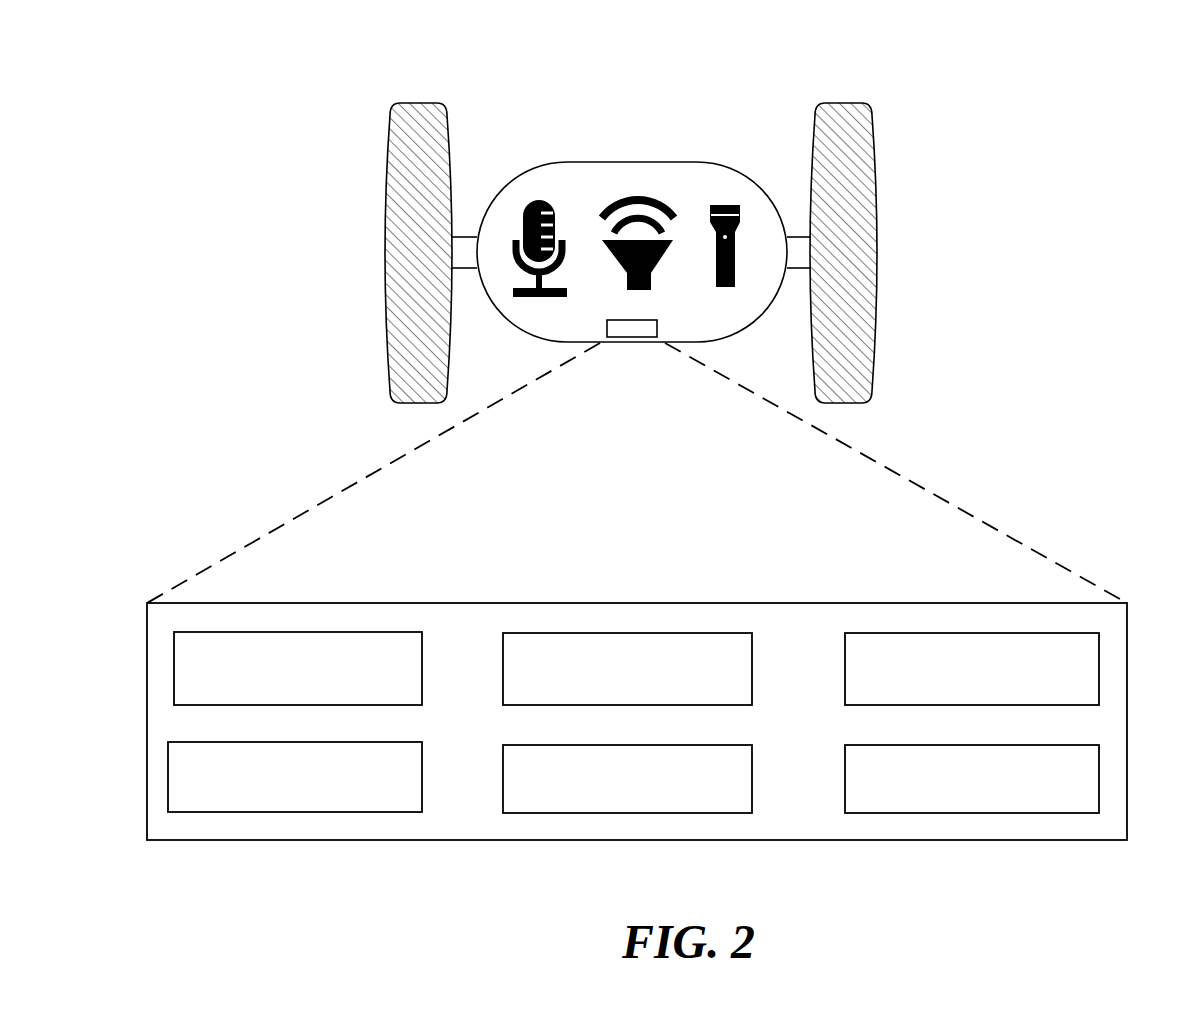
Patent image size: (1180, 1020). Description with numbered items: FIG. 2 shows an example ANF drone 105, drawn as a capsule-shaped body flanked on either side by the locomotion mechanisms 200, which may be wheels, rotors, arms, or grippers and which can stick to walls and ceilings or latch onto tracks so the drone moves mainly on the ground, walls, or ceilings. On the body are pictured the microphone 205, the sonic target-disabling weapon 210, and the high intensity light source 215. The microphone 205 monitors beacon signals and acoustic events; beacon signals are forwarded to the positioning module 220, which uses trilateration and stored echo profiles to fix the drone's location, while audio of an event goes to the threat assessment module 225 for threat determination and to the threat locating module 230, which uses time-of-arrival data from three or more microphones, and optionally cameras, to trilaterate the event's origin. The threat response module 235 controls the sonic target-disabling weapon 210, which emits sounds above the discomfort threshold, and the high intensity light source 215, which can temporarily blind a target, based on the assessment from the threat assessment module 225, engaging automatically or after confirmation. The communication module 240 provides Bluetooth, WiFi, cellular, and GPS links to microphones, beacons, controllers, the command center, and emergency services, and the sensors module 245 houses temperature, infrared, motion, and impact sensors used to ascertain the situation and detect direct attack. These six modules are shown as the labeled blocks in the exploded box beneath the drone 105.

The ANF drone 105 is at (1074, 86).
The locomotion mechanisms 200 is at (386, 253).
The microphone 205 is at (527, 198).
The sonic target-disabling weapon 210 is at (618, 200).
The high intensity light source 215 is at (735, 198).
The positioning module 220 is at (337, 632).
The threat assessment module 225 is at (586, 633).
The threat locating module 230 is at (867, 633).
The threat response module 235 is at (388, 812).
The communication module 240 is at (547, 813).
The sensors module 245 is at (887, 813).